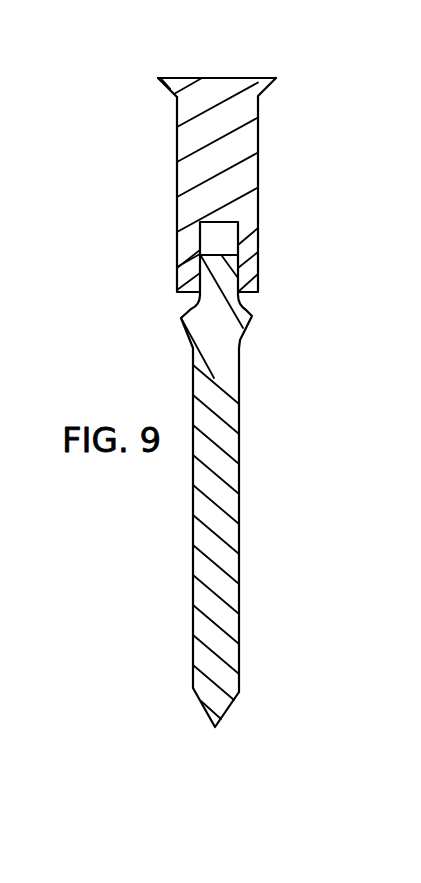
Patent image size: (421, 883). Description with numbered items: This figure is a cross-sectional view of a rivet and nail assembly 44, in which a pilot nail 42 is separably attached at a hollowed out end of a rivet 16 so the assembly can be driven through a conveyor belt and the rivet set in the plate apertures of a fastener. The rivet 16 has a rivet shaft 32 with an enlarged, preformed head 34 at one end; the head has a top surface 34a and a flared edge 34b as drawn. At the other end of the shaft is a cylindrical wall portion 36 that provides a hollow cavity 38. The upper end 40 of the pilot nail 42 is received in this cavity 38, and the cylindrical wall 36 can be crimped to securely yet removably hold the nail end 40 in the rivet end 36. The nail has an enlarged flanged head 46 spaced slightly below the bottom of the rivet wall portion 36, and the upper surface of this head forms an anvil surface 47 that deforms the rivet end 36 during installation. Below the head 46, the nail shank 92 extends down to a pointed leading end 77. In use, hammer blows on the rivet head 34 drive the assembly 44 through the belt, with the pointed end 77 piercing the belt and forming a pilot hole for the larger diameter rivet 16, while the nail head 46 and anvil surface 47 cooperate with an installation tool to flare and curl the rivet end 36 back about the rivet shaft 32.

The rivet and nail assembly 44 is at (115, 64).
The rivet 16 is at (293, 183).
The rivet shaft 32 is at (176, 222).
The preformed head 34 is at (173, 88).
The head top surface 34a is at (218, 78).
The head edge 34b is at (267, 92).
The cylindrical wall portion 36 is at (244, 272).
The hollow cavity 38 is at (230, 242).
The upper end of pilot nail 40 is at (208, 270).
The pilot nail 42 is at (257, 462).
The enlarged flanged head 46 is at (242, 330).
The anvil surface 47 is at (252, 312).
The pointed leading end 77 is at (228, 708).
The nail shank 92 is at (222, 563).